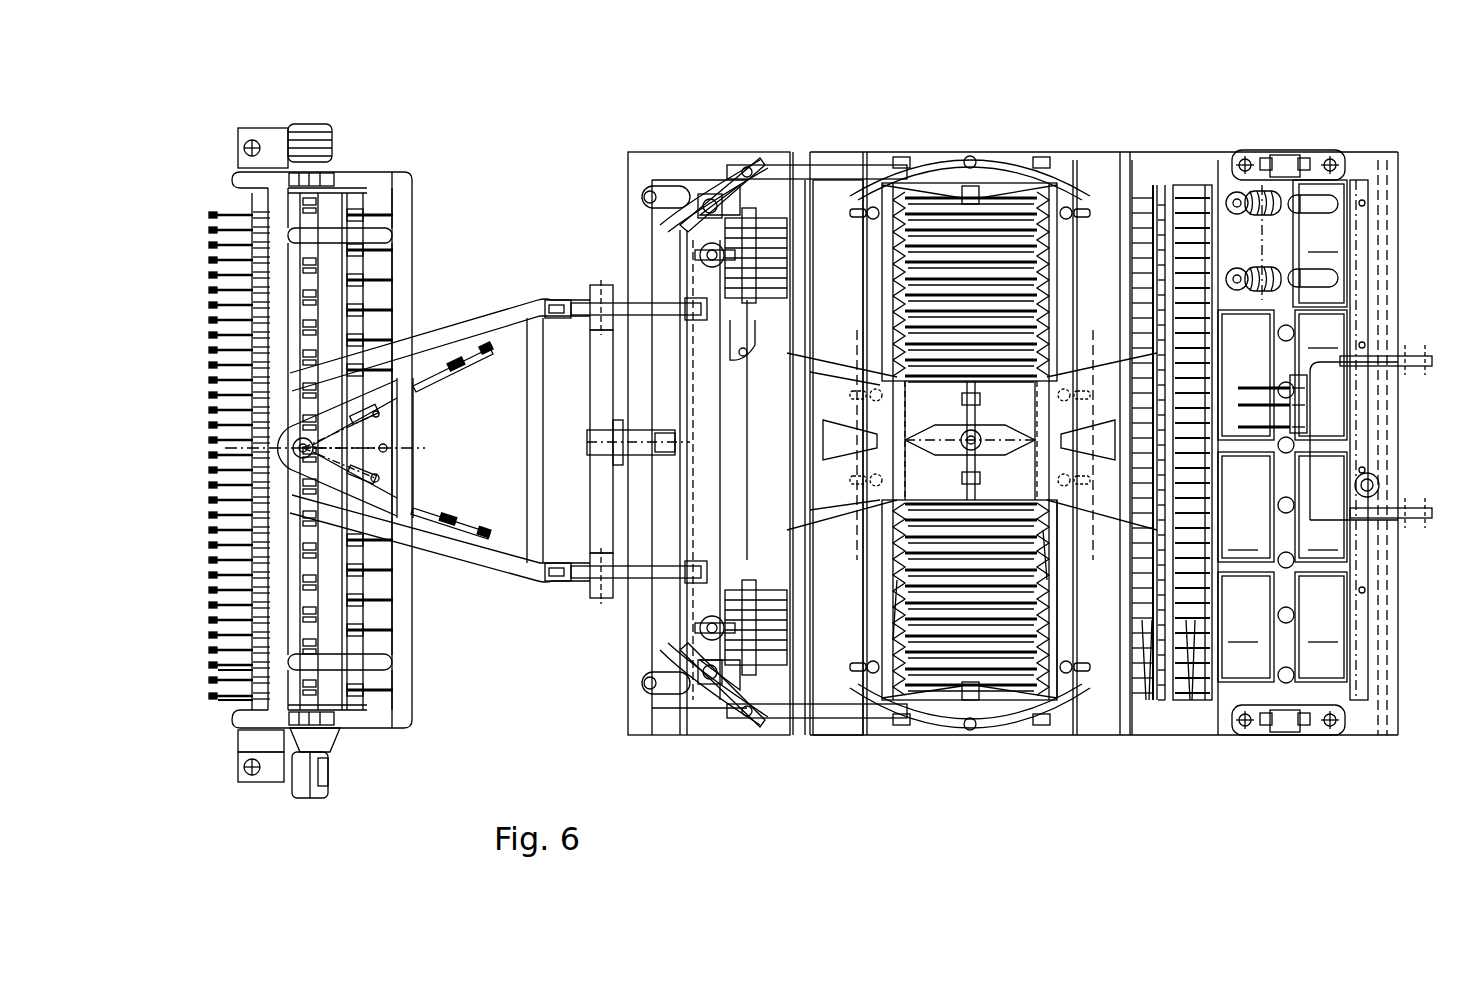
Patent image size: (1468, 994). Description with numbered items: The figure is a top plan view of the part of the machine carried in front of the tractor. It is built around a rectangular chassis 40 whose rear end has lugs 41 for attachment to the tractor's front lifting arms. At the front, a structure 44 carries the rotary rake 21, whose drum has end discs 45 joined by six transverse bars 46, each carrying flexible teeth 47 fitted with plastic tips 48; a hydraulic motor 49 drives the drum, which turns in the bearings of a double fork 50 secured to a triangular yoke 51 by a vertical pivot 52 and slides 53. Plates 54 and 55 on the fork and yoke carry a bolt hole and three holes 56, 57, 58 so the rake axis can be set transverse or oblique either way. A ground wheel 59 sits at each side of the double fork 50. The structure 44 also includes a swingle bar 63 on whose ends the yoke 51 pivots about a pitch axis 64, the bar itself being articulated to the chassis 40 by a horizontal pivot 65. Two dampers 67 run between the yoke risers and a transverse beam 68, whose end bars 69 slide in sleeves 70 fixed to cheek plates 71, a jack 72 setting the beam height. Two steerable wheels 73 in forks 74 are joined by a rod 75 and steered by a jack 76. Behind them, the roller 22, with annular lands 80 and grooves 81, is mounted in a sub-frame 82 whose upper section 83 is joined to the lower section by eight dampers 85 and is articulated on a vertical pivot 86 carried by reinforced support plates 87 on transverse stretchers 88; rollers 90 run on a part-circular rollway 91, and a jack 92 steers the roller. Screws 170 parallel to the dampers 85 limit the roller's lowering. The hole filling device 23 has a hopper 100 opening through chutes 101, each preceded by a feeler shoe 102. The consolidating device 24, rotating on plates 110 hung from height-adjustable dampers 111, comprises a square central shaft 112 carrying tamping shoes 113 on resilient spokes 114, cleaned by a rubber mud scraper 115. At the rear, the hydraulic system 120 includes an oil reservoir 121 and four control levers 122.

The rotary rake 21 is at (200, 222).
The roller 22 is at (915, 250).
The hole filling device 23 is at (1155, 120).
The consolidating device 24 is at (1288, 100).
The chassis 40 is at (660, 725).
The lugs 41 is at (1415, 350).
The structure 44 is at (405, 150).
The discs 45 is at (340, 175).
The transverse bars 46 is at (253, 208).
The flexible teeth 47 is at (218, 703).
The tip 48 is at (213, 670).
The hydraulic motor 49 is at (300, 795).
The double fork 50 is at (405, 252).
The yoke 51 is at (505, 330).
The vertical pivot 52 is at (300, 443).
The slides 53 is at (430, 380).
The plate 54 is at (395, 345).
The plate 55 is at (420, 468).
The right-hand hole 56 is at (380, 415).
The middle hole 57 is at (385, 447).
The third hole 58 is at (385, 475).
The ground wheel 59 is at (300, 130).
The swingle bar 63 is at (597, 425).
The pitch axis 64 is at (600, 285).
The horizontal pivot 65 is at (590, 450).
The dampers 67 is at (640, 300).
The transverse beam 68 is at (710, 515).
The solid cylindrical bar 69 is at (655, 195).
The sleeve 70 is at (672, 190).
The cheek plates 71 is at (715, 185).
The jack 72 is at (650, 250).
The steerable wheels 73 is at (770, 285).
The fork 74 is at (748, 255).
The rod 75 is at (688, 470).
The jack 76 is at (745, 355).
The annular lands 80 is at (895, 580).
The annular grooves 81 is at (1045, 530).
The sub-frame 82 is at (1082, 285).
The upper section 83 is at (1065, 625).
The dampers 85 is at (870, 215).
The vertical pivot 86 is at (965, 430).
The reinforced support plates 87 is at (830, 380).
The transverse stretchers 88 is at (795, 582).
The rollers 90 is at (1040, 165).
The rollway 91 is at (1135, 190).
The jack 92 is at (810, 718).
The hopper 100 is at (1190, 185).
The chutes 101 is at (1190, 660).
The feeler member 102 is at (1145, 660).
The plates 110 is at (1280, 160).
The dampers 111 is at (1245, 163).
The central shaft 112 is at (1290, 368).
The tamping shoes 113 is at (1282, 431).
The spoke 114 is at (1255, 215).
The mud scraper 115 is at (1345, 185).
The hydraulic system 120 is at (1383, 300).
The oil reservoir 121 is at (1385, 440).
The control levers 122 is at (1250, 450).
The screws 170 is at (855, 222).